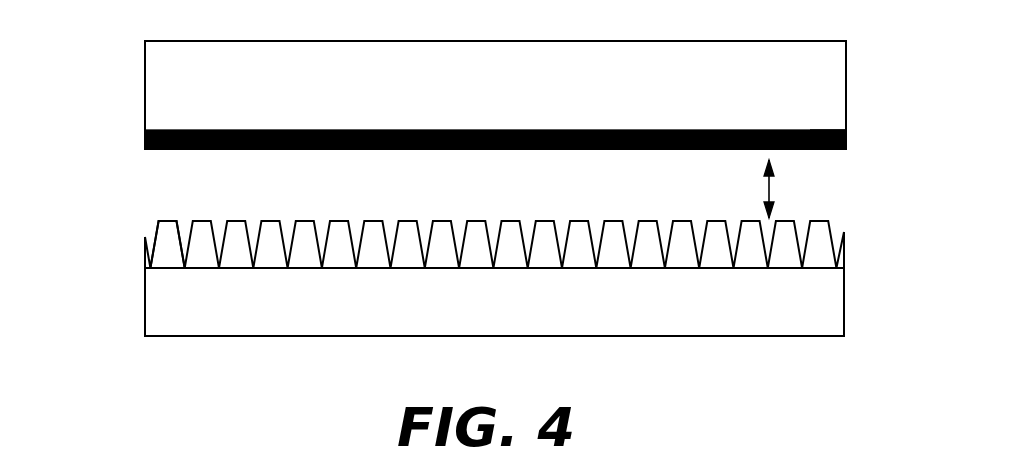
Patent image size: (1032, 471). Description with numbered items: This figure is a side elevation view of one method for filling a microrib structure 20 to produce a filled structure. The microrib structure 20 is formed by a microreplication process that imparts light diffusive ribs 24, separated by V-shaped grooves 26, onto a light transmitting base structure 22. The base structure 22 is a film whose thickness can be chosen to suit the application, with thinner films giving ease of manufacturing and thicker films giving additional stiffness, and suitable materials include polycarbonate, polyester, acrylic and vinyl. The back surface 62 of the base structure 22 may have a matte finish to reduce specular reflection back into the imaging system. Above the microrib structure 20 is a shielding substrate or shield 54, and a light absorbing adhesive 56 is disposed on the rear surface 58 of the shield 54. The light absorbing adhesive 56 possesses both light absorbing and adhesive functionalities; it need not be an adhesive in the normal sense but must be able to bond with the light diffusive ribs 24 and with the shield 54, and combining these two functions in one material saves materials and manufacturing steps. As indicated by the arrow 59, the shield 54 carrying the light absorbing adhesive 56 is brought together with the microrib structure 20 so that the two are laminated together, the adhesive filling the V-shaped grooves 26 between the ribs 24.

The microrib structure 20 is at (107, 328).
The base structure 22 is at (162, 302).
The light diffusive ribs 24 is at (145, 252).
The V-shaped grooves 26 is at (152, 225).
The shield 54 is at (167, 80).
The light absorbing adhesive 56 is at (145, 139).
The rear surface 58 is at (810, 130).
The arrow 59 is at (771, 188).
The back surface 62 is at (323, 337).